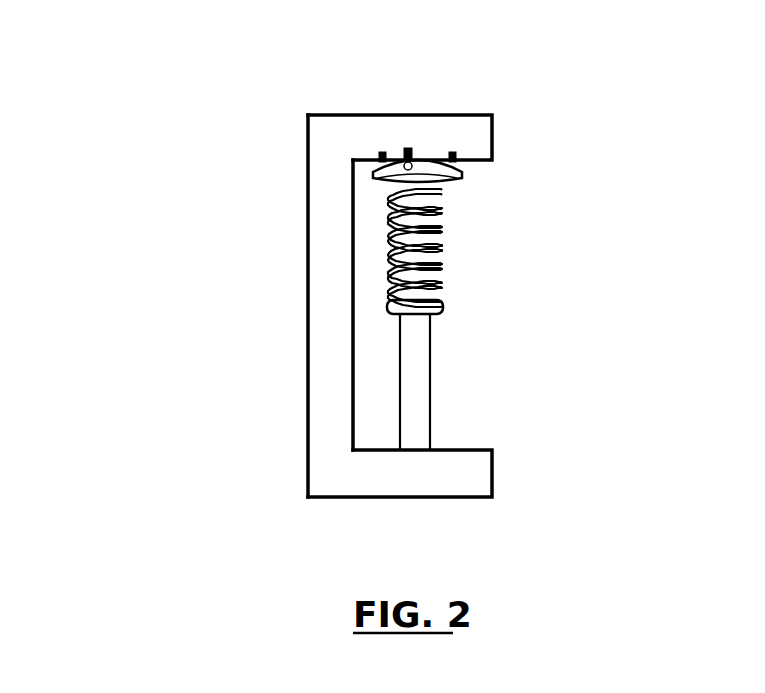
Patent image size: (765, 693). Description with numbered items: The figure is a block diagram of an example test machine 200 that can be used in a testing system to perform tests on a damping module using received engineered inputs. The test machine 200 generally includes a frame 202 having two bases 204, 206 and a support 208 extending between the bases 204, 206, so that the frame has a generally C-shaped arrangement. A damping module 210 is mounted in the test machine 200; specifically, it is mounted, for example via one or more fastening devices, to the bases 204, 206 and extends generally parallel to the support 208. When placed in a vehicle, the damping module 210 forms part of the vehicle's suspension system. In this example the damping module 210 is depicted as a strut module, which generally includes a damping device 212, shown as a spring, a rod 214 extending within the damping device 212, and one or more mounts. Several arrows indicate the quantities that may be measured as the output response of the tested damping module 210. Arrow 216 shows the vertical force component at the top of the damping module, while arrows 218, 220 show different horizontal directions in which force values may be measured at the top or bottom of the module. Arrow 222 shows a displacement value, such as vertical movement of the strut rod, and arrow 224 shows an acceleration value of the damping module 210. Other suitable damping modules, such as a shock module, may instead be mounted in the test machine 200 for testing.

The test machine 200 is at (176, 70).
The frame 202 is at (268, 163).
The base 204 is at (392, 115).
The base 206 is at (368, 497).
The support 208 is at (306, 248).
The damping module 210 is at (553, 355).
The damping device 212 is at (440, 293).
The rod 214 is at (430, 365).
The arrow 216 is at (547, 165).
The arrow 218 is at (547, 165).
The arrow 220 is at (547, 165).
The arrow 222 is at (538, 300).
The arrow 224 is at (585, 278).